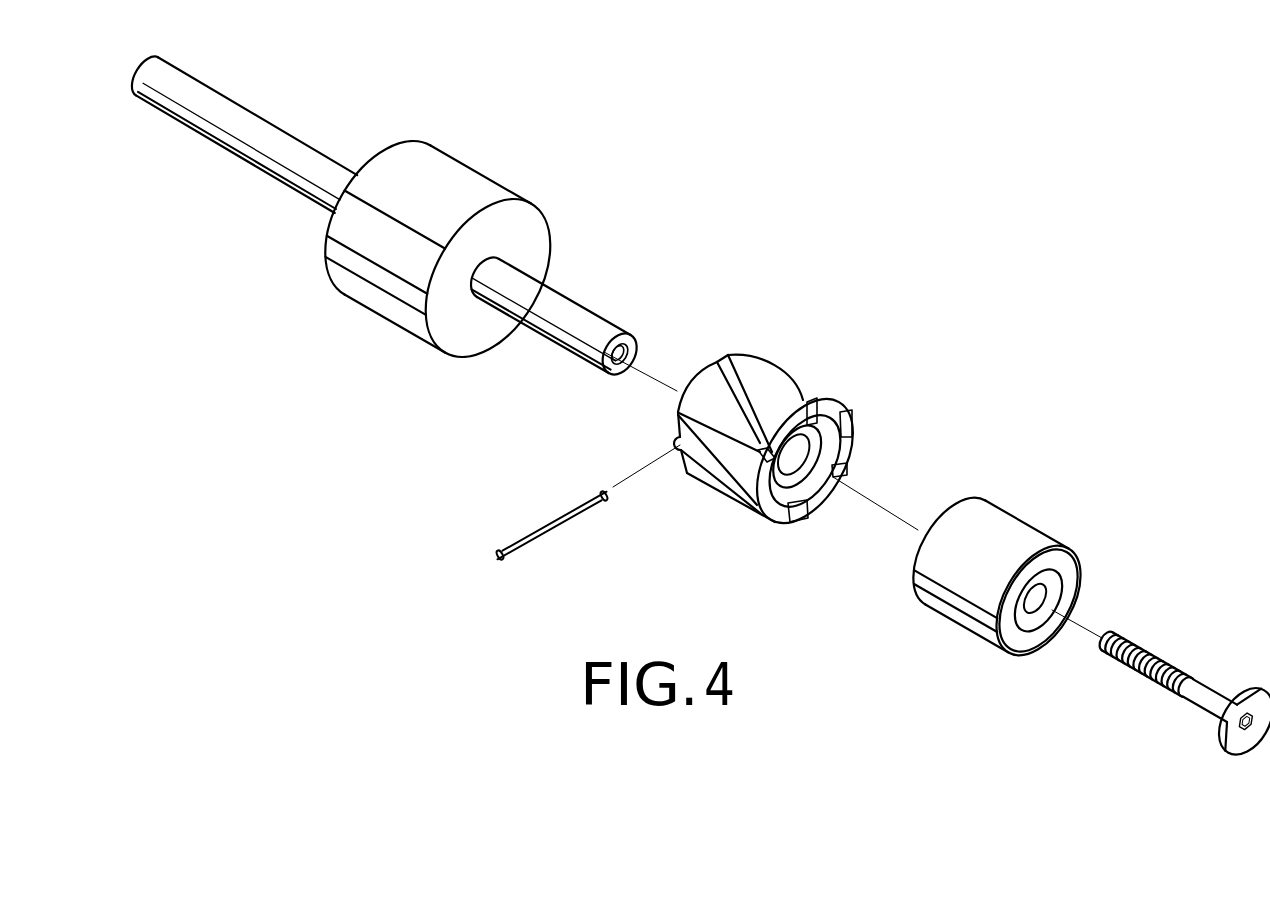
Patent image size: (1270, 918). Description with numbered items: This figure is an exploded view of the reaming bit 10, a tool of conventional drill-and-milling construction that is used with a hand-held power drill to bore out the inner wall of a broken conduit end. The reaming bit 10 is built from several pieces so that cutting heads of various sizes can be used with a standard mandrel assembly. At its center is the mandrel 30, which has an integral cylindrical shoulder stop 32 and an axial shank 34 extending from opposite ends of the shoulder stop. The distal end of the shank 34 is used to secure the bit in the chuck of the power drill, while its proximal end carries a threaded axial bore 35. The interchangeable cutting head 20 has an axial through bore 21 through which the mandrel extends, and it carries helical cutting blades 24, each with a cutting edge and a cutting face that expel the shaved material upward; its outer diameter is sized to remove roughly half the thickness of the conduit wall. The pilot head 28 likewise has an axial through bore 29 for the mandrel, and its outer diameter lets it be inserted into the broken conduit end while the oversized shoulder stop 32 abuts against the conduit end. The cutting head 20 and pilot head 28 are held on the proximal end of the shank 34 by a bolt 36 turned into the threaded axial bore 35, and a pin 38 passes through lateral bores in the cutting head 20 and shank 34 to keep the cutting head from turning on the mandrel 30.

The reaming bit 10 is at (832, 303).
The cutting head 20 is at (840, 380).
The axial through bore 21 is at (796, 447).
The helical cutting blades 24 is at (746, 350).
The pilot head 28 is at (983, 515).
The axial through bore 29 is at (1050, 600).
The mandrel 30 is at (500, 170).
The shoulder stop 32 is at (372, 308).
The shank 34 is at (230, 158).
The threaded axial bore 35 is at (627, 376).
The bolt 36 is at (1160, 645).
The pin 38 is at (530, 530).